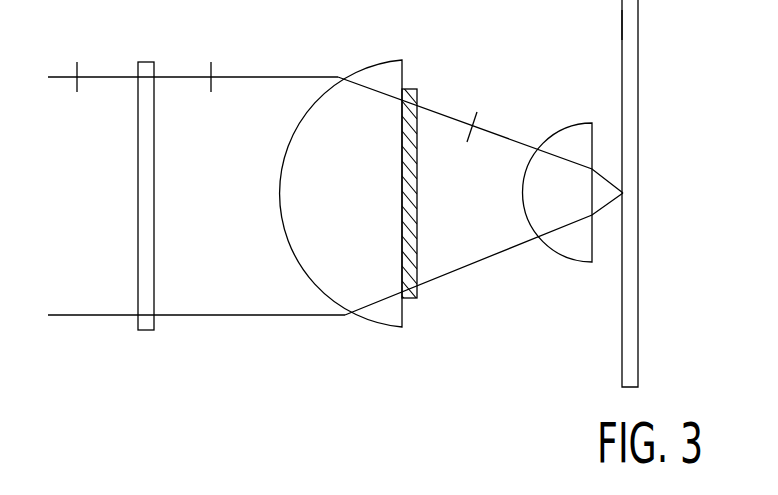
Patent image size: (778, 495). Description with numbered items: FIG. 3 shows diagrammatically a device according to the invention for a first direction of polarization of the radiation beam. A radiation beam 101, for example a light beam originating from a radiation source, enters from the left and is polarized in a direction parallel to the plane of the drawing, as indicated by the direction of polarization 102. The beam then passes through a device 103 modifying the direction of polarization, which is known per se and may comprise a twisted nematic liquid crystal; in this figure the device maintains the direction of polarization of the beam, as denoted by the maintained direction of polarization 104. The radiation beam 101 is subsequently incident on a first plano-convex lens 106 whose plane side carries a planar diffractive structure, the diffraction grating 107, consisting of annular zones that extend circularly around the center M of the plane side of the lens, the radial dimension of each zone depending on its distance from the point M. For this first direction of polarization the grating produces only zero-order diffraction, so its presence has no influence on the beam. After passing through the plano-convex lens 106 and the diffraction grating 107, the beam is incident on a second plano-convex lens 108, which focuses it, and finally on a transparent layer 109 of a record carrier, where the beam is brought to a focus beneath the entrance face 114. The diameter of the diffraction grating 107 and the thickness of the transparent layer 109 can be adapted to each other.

The radiation beam 101 is at (86, 213).
The direction of polarization 102 is at (77, 62).
The device modifying the direction of polarization 103 is at (145, 62).
The maintained direction of polarization 104 is at (211, 62).
The first plano-convex lens 106 is at (377, 72).
The diffraction grating 107 is at (418, 176).
The center of the plane side of the plano-convex lens M is at (402, 206).
The second plano-convex lens 108 is at (572, 133).
The transparent layer 109 is at (632, 55).
The entrance face 114 is at (618, 25).